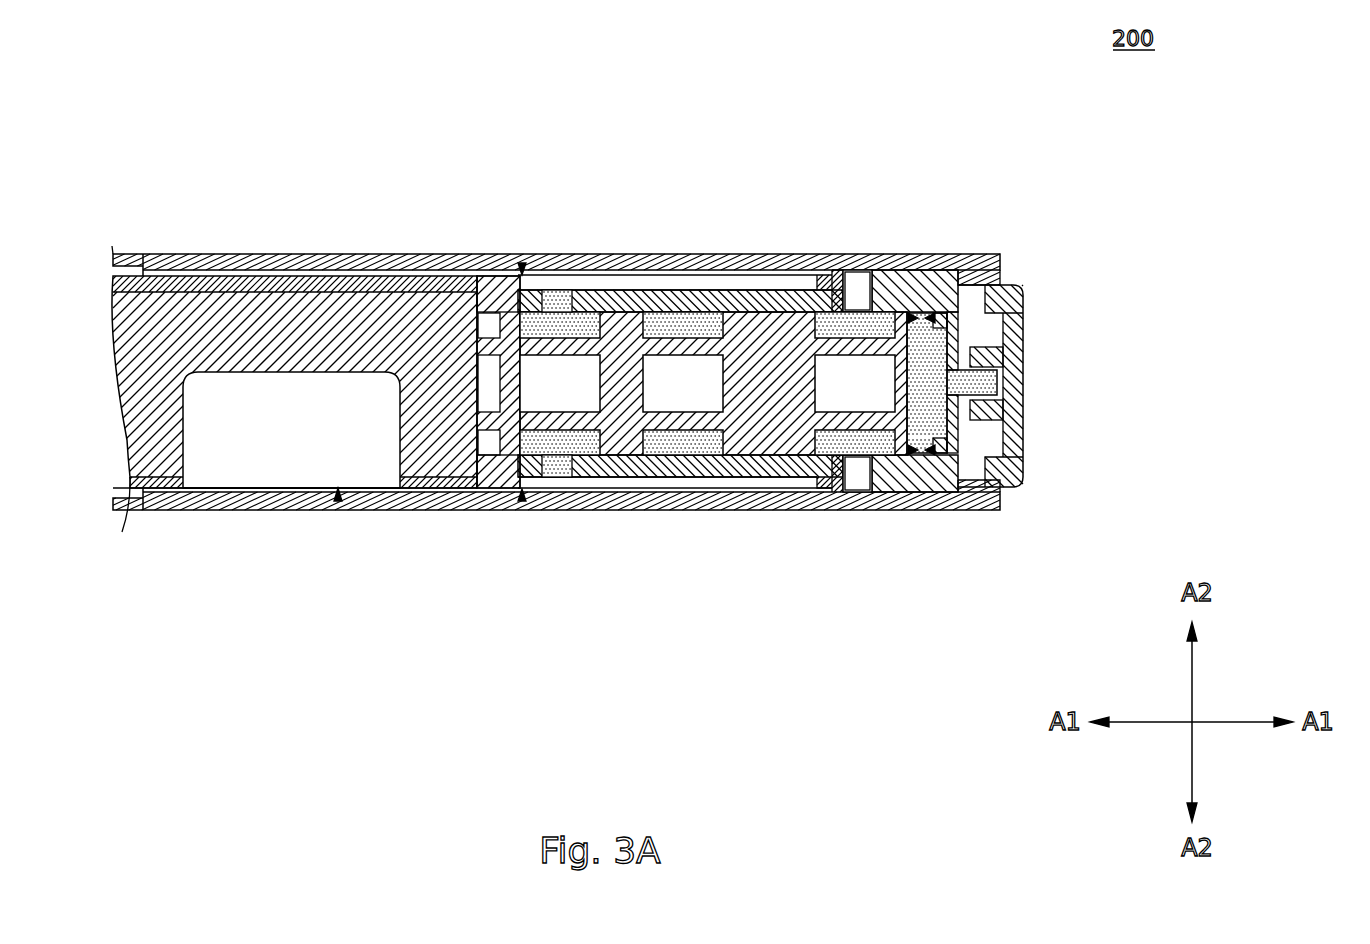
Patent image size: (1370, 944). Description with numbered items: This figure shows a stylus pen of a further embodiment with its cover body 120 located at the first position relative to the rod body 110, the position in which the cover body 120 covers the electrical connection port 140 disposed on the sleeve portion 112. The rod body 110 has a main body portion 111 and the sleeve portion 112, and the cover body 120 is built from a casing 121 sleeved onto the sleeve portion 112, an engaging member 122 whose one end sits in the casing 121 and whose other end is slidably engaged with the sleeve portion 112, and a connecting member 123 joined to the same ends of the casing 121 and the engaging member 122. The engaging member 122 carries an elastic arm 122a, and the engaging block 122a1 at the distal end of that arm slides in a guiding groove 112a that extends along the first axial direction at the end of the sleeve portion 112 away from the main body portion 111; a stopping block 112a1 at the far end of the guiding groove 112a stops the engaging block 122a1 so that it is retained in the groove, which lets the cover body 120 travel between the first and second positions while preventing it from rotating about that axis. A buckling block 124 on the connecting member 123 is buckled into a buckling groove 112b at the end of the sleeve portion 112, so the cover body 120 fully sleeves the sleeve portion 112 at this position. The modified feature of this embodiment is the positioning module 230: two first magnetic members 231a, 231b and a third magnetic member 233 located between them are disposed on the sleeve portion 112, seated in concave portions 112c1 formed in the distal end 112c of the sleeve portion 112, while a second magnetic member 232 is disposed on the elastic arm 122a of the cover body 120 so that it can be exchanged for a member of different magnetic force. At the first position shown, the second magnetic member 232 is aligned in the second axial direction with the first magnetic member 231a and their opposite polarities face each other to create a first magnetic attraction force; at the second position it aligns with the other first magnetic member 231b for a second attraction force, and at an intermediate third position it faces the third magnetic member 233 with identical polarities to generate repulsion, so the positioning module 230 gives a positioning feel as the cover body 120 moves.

The rod body 110 is at (308, 182).
The main body portion 111 is at (133, 257).
The sleeve portion 112 is at (285, 300).
The guiding groove 112a is at (521, 268).
The stopping block 112a1 is at (836, 288).
The buckling groove 112b is at (983, 472).
The distal end 112c is at (485, 392).
The concave portions 112c1 is at (890, 300).
The cover body 120 is at (1098, 203).
The casing 121 is at (993, 262).
The engaging member 122 is at (975, 258).
The elastic arm 122a is at (737, 295).
The engaging block 122a1 is at (495, 282).
The connecting member 123 is at (1023, 352).
The buckling block 124 is at (993, 383).
The electrical connection port 140 is at (338, 505).
The positioning module 230 is at (413, 683).
The first magnetic member 231a is at (603, 315).
The first magnetic member 231b is at (855, 300).
The second magnetic member 232 is at (550, 298).
The third magnetic member 233 is at (690, 310).